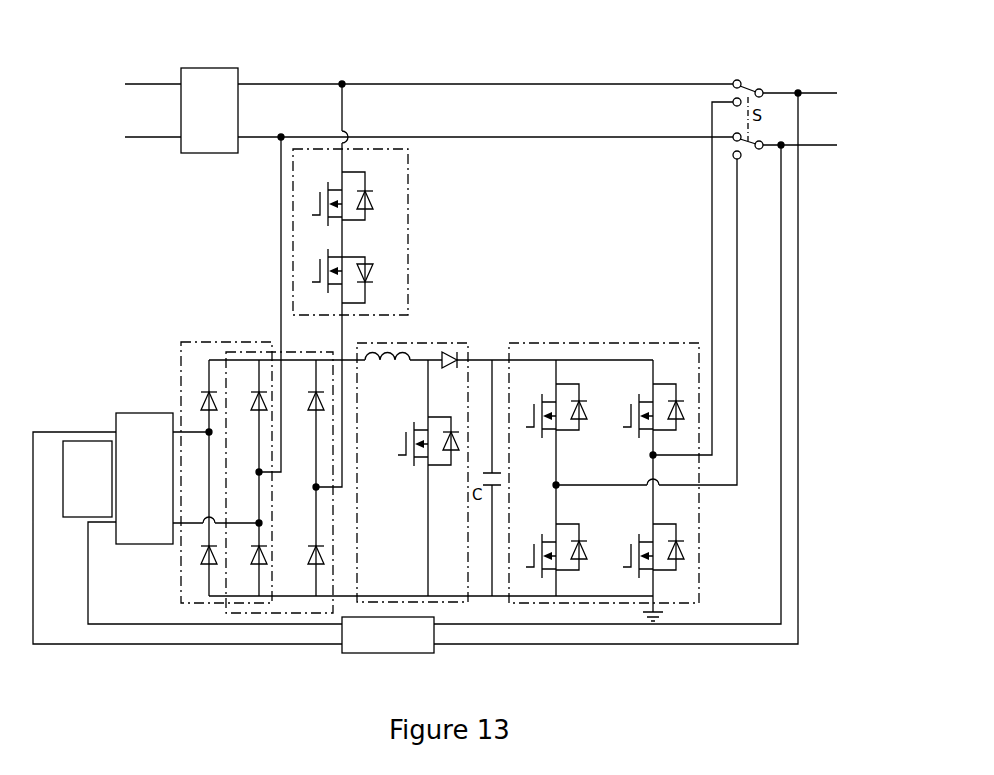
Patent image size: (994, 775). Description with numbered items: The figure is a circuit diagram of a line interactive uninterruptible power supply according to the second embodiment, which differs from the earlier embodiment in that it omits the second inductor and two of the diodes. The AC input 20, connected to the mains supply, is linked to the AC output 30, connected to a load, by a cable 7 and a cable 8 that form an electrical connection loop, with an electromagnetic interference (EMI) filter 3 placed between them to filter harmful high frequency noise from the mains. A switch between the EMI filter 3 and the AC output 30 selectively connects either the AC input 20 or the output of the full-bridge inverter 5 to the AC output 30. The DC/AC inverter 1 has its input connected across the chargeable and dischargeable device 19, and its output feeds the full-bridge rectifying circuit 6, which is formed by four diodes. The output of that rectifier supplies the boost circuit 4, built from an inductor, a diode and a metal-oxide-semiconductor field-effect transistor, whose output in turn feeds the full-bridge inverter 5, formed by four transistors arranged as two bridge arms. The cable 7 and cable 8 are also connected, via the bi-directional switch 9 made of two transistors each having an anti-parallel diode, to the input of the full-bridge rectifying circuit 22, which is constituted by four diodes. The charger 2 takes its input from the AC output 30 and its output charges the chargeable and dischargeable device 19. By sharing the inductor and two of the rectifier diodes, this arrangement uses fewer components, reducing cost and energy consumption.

The DC/AC inverter 1 is at (152, 413).
The charger 2 is at (388, 653).
The electromagnetic interference (EMI) filter 3 is at (207, 68).
The boost circuit 4 is at (412, 343).
The full-bridge inverter 5 is at (604, 343).
The full-bridge rectifying circuit 6 is at (216, 342).
The cable 7 is at (487, 84).
The cable 8 is at (487, 137).
The bi-directional switch 9 is at (408, 228).
The chargeable and dischargeable device 19 is at (80, 517).
The AC input 20 is at (140, 110).
The full-bridge rectifying circuit 22 is at (298, 352).
The AC output 30 is at (810, 119).